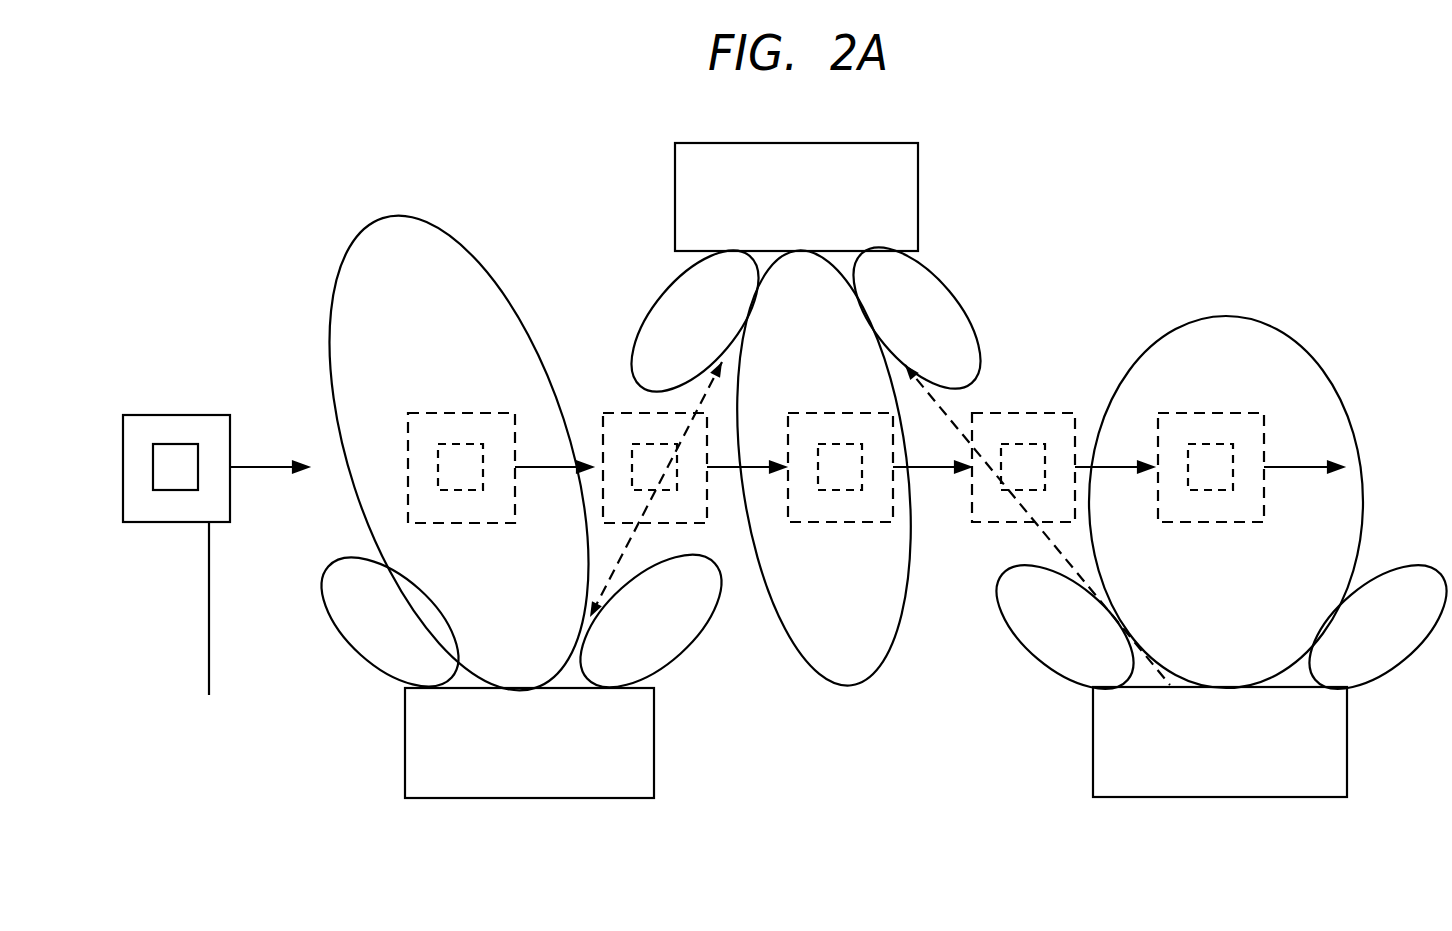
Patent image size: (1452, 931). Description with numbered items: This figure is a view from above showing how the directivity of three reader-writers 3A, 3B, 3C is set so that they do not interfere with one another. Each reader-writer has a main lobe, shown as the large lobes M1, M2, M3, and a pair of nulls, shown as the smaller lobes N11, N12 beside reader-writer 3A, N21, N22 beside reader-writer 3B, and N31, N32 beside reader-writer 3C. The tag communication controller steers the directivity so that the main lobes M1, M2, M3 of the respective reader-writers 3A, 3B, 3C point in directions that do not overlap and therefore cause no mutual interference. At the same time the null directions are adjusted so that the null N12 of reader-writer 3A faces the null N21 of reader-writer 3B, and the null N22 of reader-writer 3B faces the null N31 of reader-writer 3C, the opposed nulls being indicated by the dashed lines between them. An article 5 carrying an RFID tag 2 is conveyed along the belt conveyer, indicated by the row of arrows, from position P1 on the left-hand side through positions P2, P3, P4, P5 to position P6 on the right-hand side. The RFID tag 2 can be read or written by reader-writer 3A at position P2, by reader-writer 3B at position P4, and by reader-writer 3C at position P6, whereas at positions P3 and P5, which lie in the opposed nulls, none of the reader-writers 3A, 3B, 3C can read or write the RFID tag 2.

The RFID tag 2 is at (165, 444).
The article 5 is at (207, 415).
The reader-writer 3A is at (405, 743).
The reader-writer 3B is at (918, 195).
The reader-writer 3C is at (1347, 740).
The main lobe M1 is at (362, 222).
The main lobe M2 is at (835, 685).
The main lobe M3 is at (1182, 321).
The null N11 is at (410, 580).
The null N12 is at (592, 608).
The null N21 is at (718, 366).
The null N22 is at (903, 365).
The null N31 is at (1098, 586).
The null N32 is at (1360, 577).
The position P1 is at (210, 626).
The position P2 is at (496, 413).
The position P3 is at (656, 572).
The position P4 is at (840, 568).
The position P5 is at (1061, 413).
The position P6 is at (1246, 413).